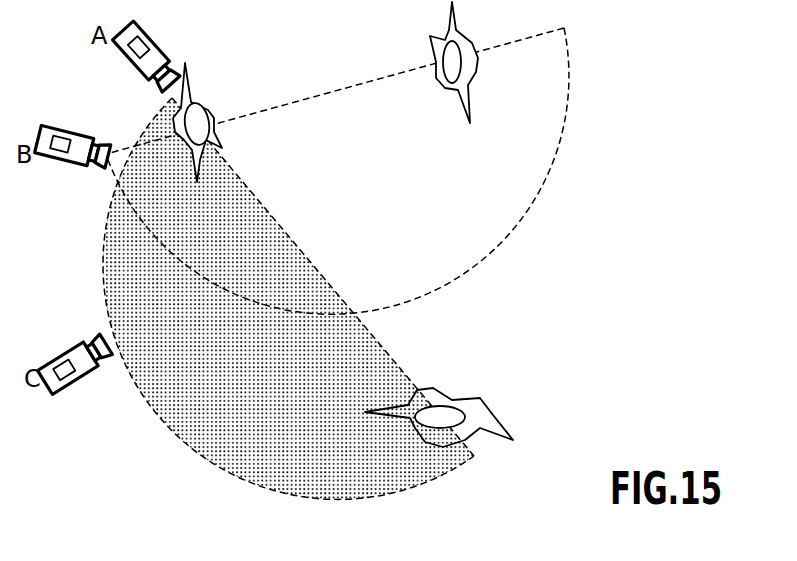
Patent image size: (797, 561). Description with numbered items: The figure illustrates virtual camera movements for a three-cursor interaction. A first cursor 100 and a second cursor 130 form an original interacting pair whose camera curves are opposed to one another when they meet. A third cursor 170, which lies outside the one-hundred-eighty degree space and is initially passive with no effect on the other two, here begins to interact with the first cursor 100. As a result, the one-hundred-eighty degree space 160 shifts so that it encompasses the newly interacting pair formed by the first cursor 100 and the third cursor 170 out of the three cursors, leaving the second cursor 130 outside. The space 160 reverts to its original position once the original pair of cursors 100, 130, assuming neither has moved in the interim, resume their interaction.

The first cursor 100 is at (193, 71).
The second cursor 130 is at (457, 25).
The 180° space 160 is at (185, 447).
The third cursor 170 is at (483, 400).